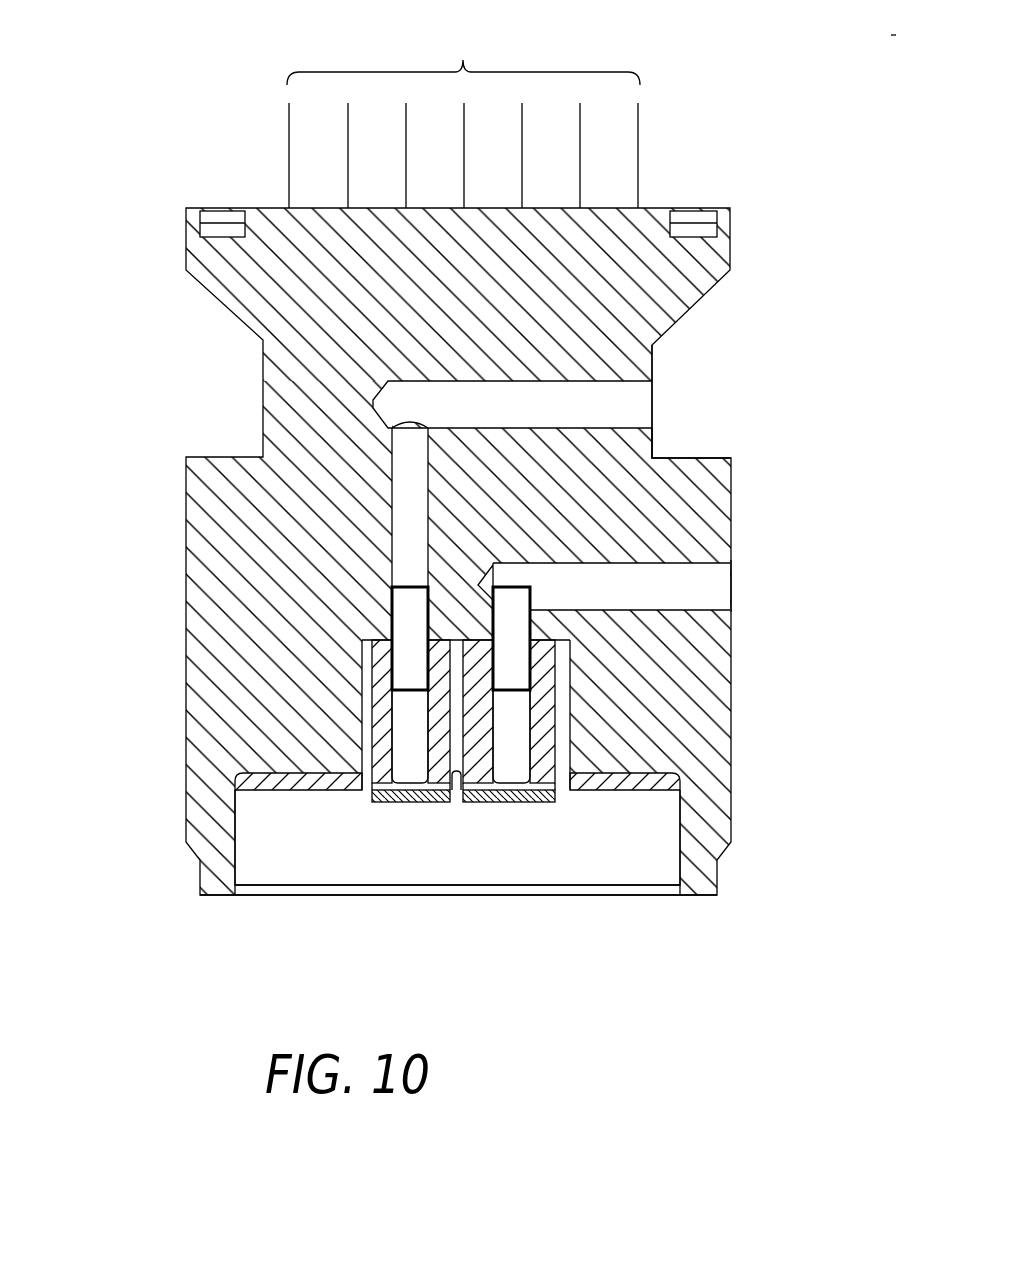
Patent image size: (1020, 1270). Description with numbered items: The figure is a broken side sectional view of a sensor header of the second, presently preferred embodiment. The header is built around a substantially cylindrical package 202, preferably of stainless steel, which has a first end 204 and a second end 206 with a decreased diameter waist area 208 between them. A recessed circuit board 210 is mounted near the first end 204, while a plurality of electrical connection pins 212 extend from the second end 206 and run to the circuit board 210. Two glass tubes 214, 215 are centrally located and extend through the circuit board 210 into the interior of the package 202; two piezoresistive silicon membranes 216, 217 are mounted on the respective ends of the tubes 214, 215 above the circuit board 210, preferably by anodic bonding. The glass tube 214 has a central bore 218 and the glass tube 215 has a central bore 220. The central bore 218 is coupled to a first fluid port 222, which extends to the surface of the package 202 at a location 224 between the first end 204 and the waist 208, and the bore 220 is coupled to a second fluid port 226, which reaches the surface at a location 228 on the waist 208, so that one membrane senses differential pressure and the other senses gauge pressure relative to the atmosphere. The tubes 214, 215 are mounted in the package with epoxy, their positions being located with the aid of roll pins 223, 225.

The package 202 is at (731, 695).
The first end 204 is at (217, 897).
The second end 206 is at (648, 207).
The waist area 208 is at (653, 363).
The recessed circuit board 210 is at (297, 790).
The electrical connection pins 212 is at (463, 112).
The glass tube 214 is at (578, 773).
The glass tube 215 is at (370, 773).
The piezoresistive silicon membrane 216 is at (516, 800).
The piezoresistive silicon membrane 217 is at (413, 802).
The central bore 218 is at (517, 723).
The central bore 220 is at (405, 723).
The first fluid port 222 is at (661, 598).
The roll pin 223 is at (525, 628).
The location 224 is at (731, 597).
The roll pin 225 is at (405, 617).
The second fluid port 226 is at (542, 416).
The location 228 is at (653, 420).